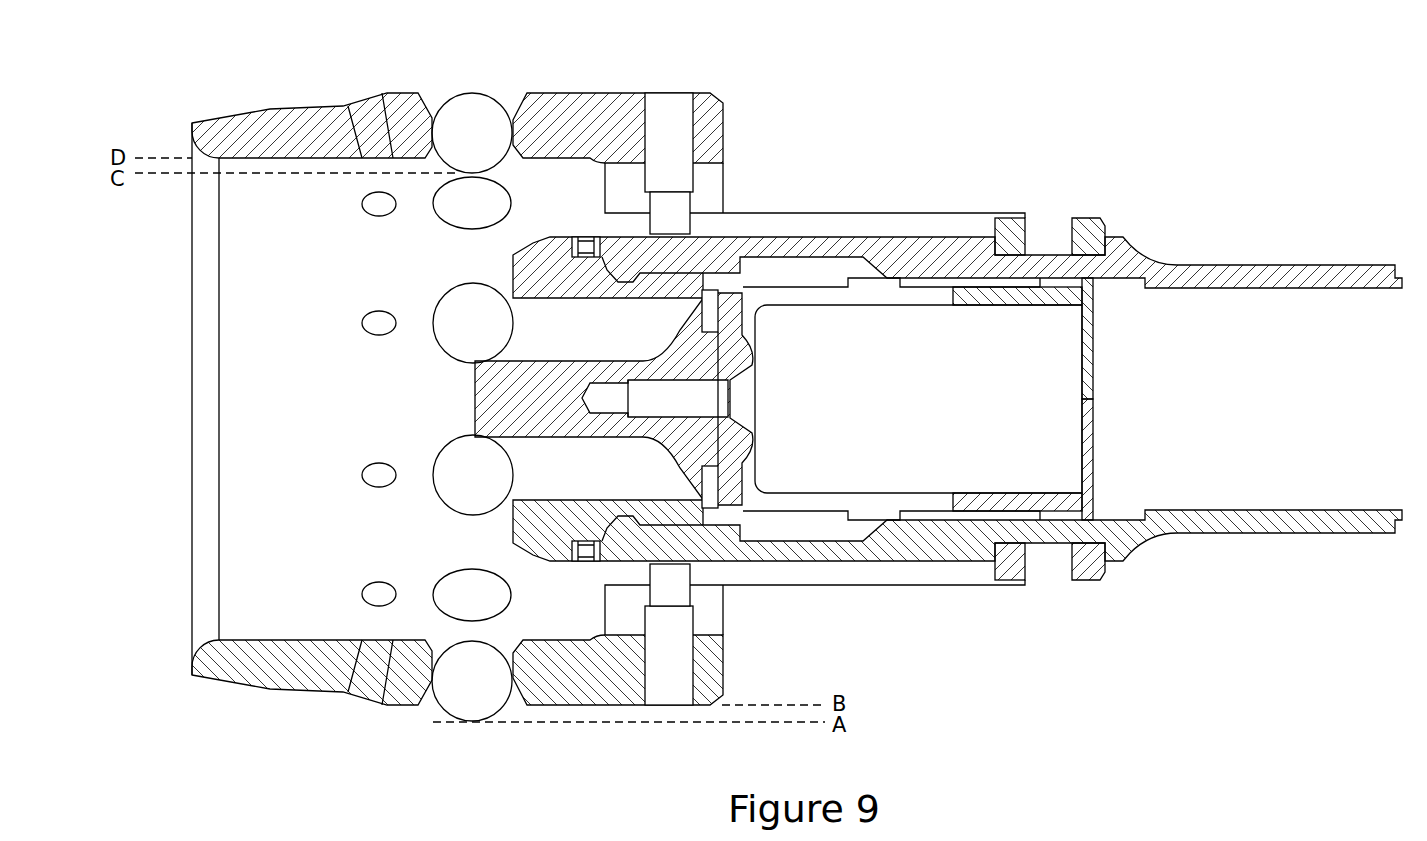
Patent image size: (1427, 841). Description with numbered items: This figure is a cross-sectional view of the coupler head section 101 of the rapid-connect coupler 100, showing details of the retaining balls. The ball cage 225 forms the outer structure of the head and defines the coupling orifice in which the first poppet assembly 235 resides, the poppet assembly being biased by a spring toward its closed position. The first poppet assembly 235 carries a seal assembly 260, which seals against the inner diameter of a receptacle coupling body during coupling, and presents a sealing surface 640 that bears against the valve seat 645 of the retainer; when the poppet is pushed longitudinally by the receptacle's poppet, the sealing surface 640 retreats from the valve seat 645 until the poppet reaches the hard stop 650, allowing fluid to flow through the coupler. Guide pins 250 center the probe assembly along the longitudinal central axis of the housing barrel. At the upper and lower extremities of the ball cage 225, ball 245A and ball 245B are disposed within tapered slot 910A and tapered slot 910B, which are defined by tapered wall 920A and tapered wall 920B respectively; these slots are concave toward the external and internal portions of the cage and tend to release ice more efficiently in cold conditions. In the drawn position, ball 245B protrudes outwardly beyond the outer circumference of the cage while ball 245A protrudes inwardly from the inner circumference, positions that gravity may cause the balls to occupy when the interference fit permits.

The coupler head section 101 is at (252, 60).
The rapid-connect coupler 100 is at (1149, 96).
The ball cage 225 is at (270, 692).
The tapered slot 910A is at (436, 92).
The tapered slot 910B is at (432, 710).
The tapered wall 920A is at (510, 98).
The tapered wall 920B is at (515, 703).
The ball 245A is at (455, 168).
The ball 245B is at (455, 630).
The first poppet assembly 235 is at (470, 408).
The sealing surface 640 is at (712, 305).
The valve seat 645 is at (715, 512).
The hard stop 650 is at (1130, 262).
The seal assembly 260 is at (585, 562).
The guide pin 250 is at (667, 705).